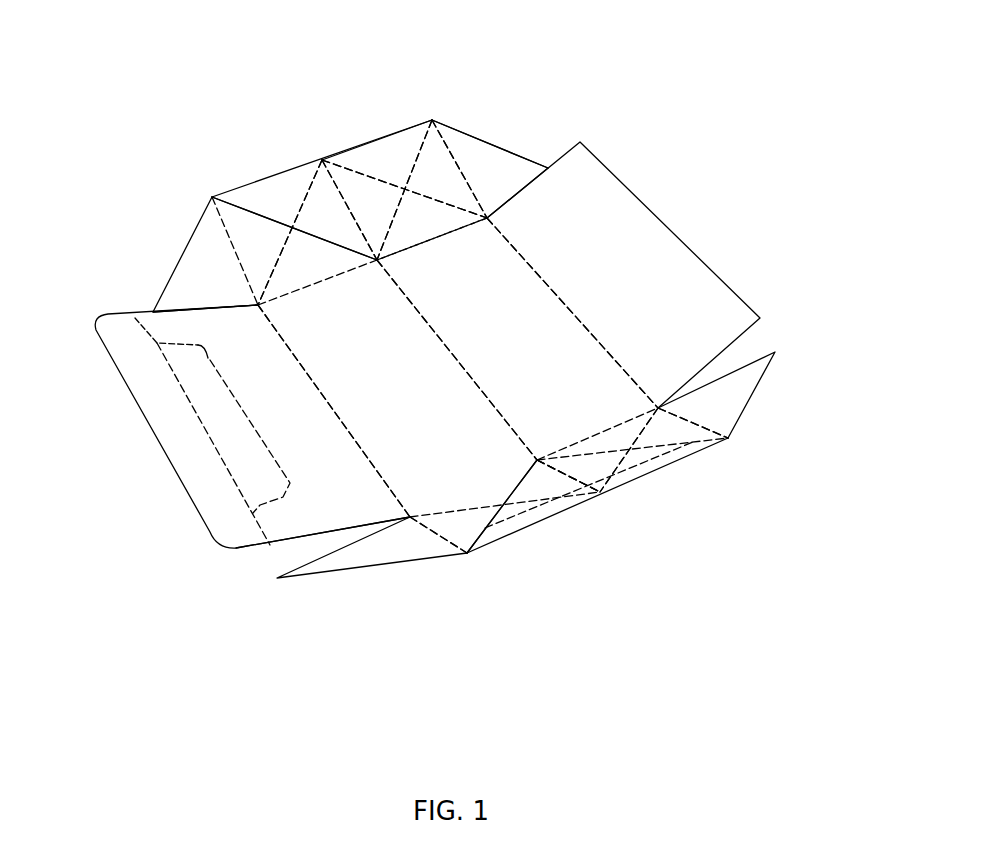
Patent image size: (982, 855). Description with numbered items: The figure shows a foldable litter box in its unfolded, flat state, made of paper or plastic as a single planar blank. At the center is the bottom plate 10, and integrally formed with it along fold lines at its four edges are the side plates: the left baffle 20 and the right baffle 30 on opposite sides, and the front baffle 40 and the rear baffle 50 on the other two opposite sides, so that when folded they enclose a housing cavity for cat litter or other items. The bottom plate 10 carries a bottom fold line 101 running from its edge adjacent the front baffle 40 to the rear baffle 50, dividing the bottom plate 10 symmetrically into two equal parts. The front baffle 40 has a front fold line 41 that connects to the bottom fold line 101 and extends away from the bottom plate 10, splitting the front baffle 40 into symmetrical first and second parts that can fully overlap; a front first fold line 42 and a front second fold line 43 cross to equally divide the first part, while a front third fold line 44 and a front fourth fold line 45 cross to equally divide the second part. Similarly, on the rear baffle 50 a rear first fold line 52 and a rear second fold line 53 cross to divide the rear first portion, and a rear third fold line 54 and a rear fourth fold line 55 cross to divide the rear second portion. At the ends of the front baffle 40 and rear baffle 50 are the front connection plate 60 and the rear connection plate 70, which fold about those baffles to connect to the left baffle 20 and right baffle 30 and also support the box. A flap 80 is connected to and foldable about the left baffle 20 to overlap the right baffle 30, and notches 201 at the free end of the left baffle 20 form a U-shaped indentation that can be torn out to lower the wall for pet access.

The bottom plate 10 is at (458, 362).
The left baffle 20 is at (281, 477).
The right baffle 30 is at (625, 258).
The front baffle 40 is at (576, 524).
The front fold line 41 is at (680, 358).
The front first fold line 42 is at (520, 517).
The front second fold line 43 is at (593, 505).
The front third fold line 44 is at (724, 450).
The front fourth fold line 45 is at (655, 458).
The rear baffle 50 is at (380, 194).
The rear first fold line 52 is at (255, 156).
The rear second fold line 53 is at (311, 212).
The rear third fold line 54 is at (377, 169).
The rear fourth fold line 55 is at (367, 136).
The front connection plate 60 is at (567, 485).
The rear connection plate 70 is at (308, 173).
The flap 80 is at (252, 443).
The bottom fold line 101 is at (313, 402).
The notches 201 is at (121, 353).